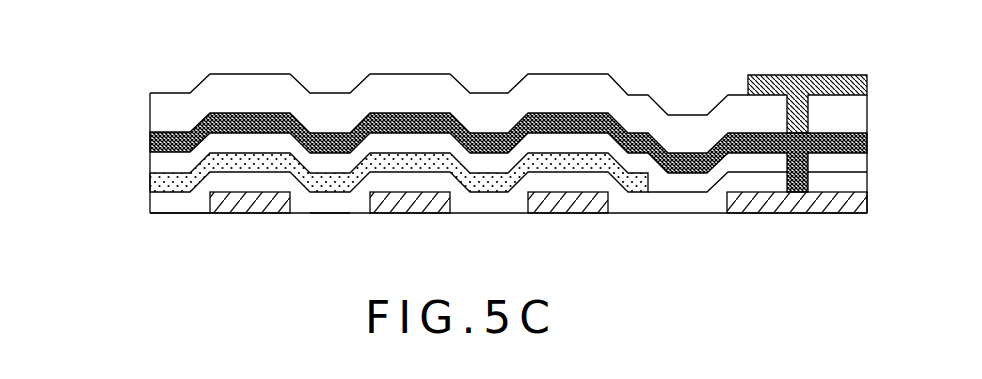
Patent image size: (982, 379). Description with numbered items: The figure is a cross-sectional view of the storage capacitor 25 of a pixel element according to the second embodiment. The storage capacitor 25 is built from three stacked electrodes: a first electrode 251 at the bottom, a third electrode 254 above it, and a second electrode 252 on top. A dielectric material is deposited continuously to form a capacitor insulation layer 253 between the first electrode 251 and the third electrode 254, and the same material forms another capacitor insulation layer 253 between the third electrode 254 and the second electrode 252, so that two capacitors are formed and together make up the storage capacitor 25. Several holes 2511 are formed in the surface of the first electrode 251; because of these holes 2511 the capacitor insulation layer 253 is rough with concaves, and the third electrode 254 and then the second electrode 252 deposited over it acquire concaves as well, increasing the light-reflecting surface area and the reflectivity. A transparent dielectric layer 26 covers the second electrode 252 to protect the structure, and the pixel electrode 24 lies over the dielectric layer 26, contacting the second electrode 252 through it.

The pixel electrode 24 is at (821, 82).
The storage capacitor 25 is at (73, 127).
The dielectric layer 26 is at (163, 103).
The first electrode 251 is at (190, 198).
The holes 2511 is at (327, 195).
The second electrode 252 is at (152, 139).
The capacitor insulation layer 253 is at (152, 203).
The third electrode 254 is at (205, 154).